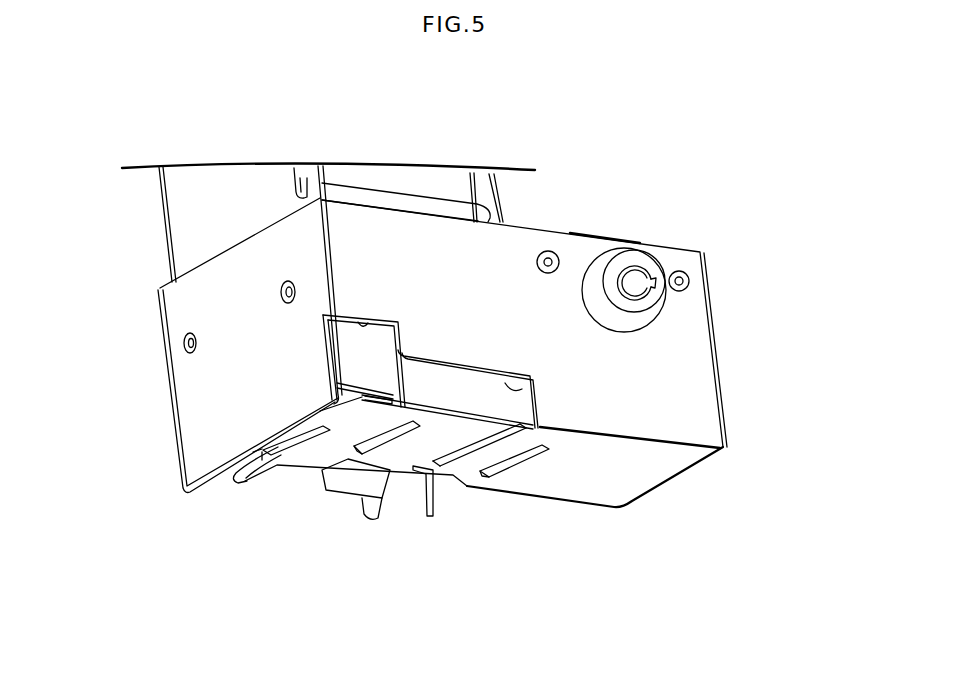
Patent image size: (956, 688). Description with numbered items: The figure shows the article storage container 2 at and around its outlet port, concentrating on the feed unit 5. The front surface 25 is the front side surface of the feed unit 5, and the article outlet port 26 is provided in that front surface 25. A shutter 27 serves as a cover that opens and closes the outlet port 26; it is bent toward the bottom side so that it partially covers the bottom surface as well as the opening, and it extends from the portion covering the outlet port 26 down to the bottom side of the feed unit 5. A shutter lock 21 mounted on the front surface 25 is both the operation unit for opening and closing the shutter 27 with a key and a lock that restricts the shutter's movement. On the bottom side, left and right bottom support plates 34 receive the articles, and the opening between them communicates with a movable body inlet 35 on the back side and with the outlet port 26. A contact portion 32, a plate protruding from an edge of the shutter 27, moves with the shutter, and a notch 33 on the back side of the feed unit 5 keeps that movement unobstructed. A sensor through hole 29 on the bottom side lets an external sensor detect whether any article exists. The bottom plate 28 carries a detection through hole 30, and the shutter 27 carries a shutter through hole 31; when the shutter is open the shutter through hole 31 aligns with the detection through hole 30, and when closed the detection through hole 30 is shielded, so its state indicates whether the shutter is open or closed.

The bracket 2 is at (785, 262).
The feed unit 5 is at (238, 343).
The shutter lock 21 is at (641, 267).
The front surface 25 is at (658, 358).
The article outlet port 26 is at (520, 390).
The shutter 27 is at (455, 420).
The bottom plate 28 is at (635, 475).
The sensor through hole 29 is at (240, 476).
The detection through hole 30 is at (510, 457).
The shutter through hole 31 is at (389, 437).
The contact portion 32 is at (318, 457).
The notch 33 is at (423, 470).
The bottom support plates 34 is at (235, 478).
The movable body inlet 35 is at (278, 479).